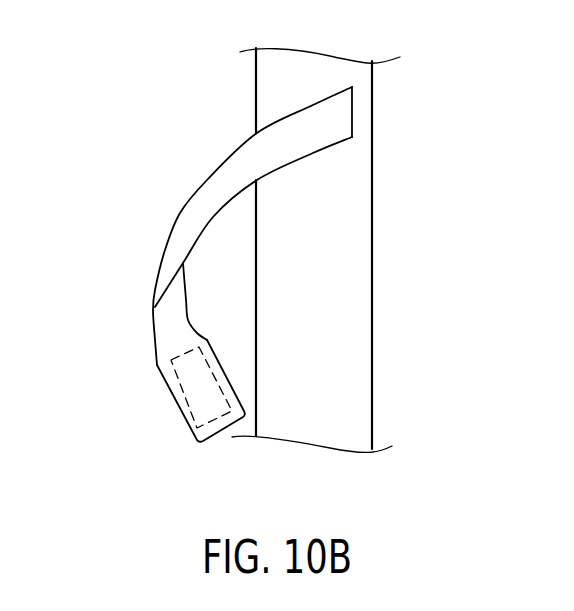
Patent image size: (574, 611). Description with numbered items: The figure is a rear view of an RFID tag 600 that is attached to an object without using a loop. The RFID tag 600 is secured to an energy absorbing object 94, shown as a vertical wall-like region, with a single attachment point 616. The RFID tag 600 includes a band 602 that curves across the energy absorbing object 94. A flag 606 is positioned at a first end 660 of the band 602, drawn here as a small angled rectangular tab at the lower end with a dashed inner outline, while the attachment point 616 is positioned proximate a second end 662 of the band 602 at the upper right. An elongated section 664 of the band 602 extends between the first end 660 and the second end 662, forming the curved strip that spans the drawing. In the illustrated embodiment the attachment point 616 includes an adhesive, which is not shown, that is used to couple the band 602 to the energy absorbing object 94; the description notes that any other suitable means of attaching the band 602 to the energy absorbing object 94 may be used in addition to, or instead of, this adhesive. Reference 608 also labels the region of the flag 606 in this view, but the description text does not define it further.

The energy absorbing object 94 is at (325, 288).
The RFID tag 600 is at (155, 287).
The band 602 is at (177, 213).
The elongated section 664 is at (213, 193).
The second end 662 is at (355, 93).
The attachment point 616 is at (332, 120).
The flag 606 is at (193, 427).
The first end 660 is at (217, 433).
The tab edge 608 is at (175, 370).